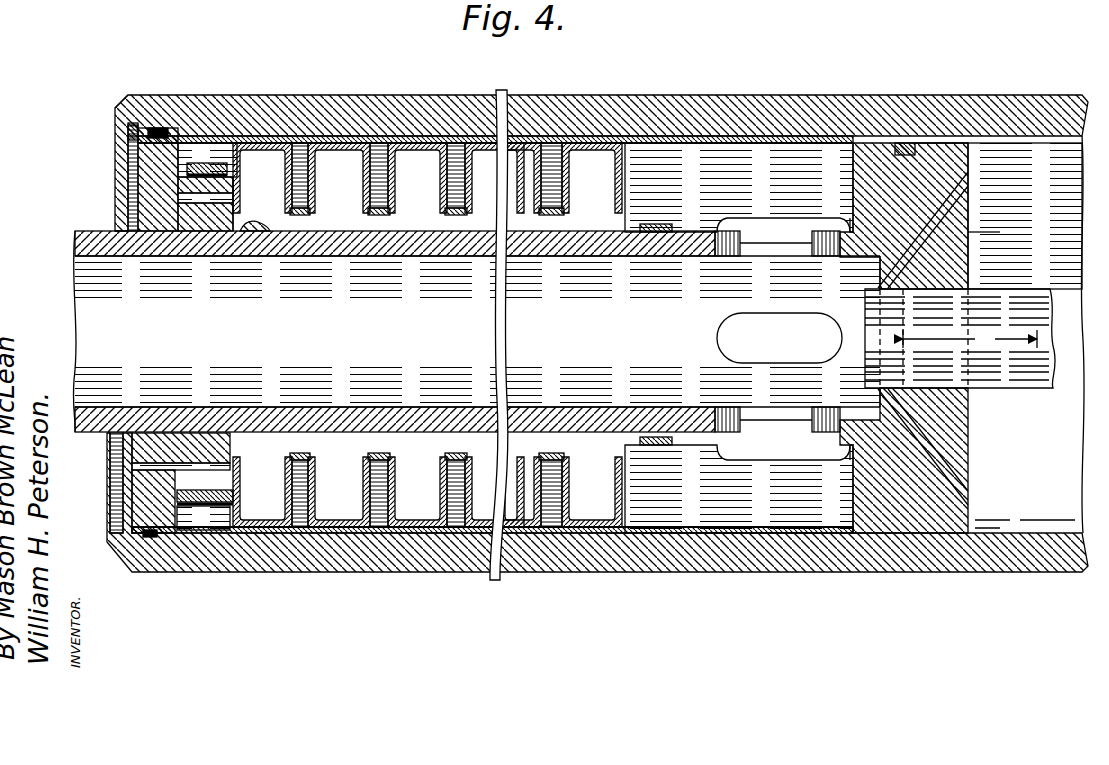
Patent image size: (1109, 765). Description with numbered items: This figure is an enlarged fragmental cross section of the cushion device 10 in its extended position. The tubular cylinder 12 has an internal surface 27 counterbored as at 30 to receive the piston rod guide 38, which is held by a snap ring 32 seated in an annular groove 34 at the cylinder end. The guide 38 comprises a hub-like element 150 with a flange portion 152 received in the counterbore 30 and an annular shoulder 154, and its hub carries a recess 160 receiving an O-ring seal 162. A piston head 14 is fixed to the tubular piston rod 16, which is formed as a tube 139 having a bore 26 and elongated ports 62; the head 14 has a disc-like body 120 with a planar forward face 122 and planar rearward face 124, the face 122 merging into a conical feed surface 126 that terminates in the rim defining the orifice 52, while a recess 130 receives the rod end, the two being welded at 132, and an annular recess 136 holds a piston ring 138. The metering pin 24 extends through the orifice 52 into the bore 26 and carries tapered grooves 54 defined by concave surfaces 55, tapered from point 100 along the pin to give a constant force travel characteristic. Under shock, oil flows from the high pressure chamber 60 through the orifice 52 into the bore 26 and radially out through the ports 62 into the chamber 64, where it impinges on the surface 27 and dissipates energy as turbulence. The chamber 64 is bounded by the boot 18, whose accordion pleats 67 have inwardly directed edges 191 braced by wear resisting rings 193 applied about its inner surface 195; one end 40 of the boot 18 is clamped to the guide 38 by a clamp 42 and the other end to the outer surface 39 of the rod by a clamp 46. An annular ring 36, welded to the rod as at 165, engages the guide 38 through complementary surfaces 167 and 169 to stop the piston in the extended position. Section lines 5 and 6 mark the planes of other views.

The cushion device 10 is at (392, 578).
The tubular cylinder 12 is at (732, 95).
The piston head 14 is at (938, 542).
The tubular piston rod 16 is at (76, 240).
The tubular sealing member or boot 18 is at (600, 145).
The metering pin 24 is at (1056, 302).
The bore 26 is at (108, 302).
The internal surface 27 is at (1082, 136).
The counterbore 30 is at (200, 143).
The snap ring 32 is at (128, 135).
The annular groove 34 is at (115, 108).
The annular ring 36 is at (246, 228).
The piston rod guide 38 is at (215, 165).
The outer surface 39 is at (106, 230).
The end of tubular seal 40 is at (237, 175).
The clamp 42 is at (252, 140).
The clamp 46 is at (656, 228).
The orifice 52 is at (888, 298).
The tapered grooves 54 is at (996, 296).
The concave surfaces 55 is at (1036, 300).
The chamber 60 is at (1012, 152).
The ports 62 is at (746, 240).
The chamber 64 is at (828, 168).
The accordion type pleats 67 is at (400, 142).
The point 100 is at (905, 346).
The disc-like body 120 is at (985, 192).
The planar forward face 122 is at (992, 518).
The planar rearward face 124 is at (853, 218).
The conical feed surface 126 is at (968, 238).
The recess 130 is at (958, 178).
The weld 132 is at (853, 442).
The annular recess 136 is at (950, 136).
The piston ring 138 is at (906, 143).
The tube 139 is at (100, 432).
The hub-like element 150 is at (160, 236).
The flange portion 152 is at (150, 162).
The annular shoulder 154 is at (300, 140).
The recess 160 is at (134, 123).
The O-ring seal 162 is at (158, 128).
The weld 165 is at (282, 236).
The complementary surface 167 is at (232, 234).
The complementary surface 169 is at (246, 234).
The inwardly directed edges 191 is at (300, 192).
The bracing wear resisting rings 193 is at (300, 216).
The inner surface 195 is at (462, 540).
The section line 5 is at (777, 233).
The section line 6 is at (553, 95).